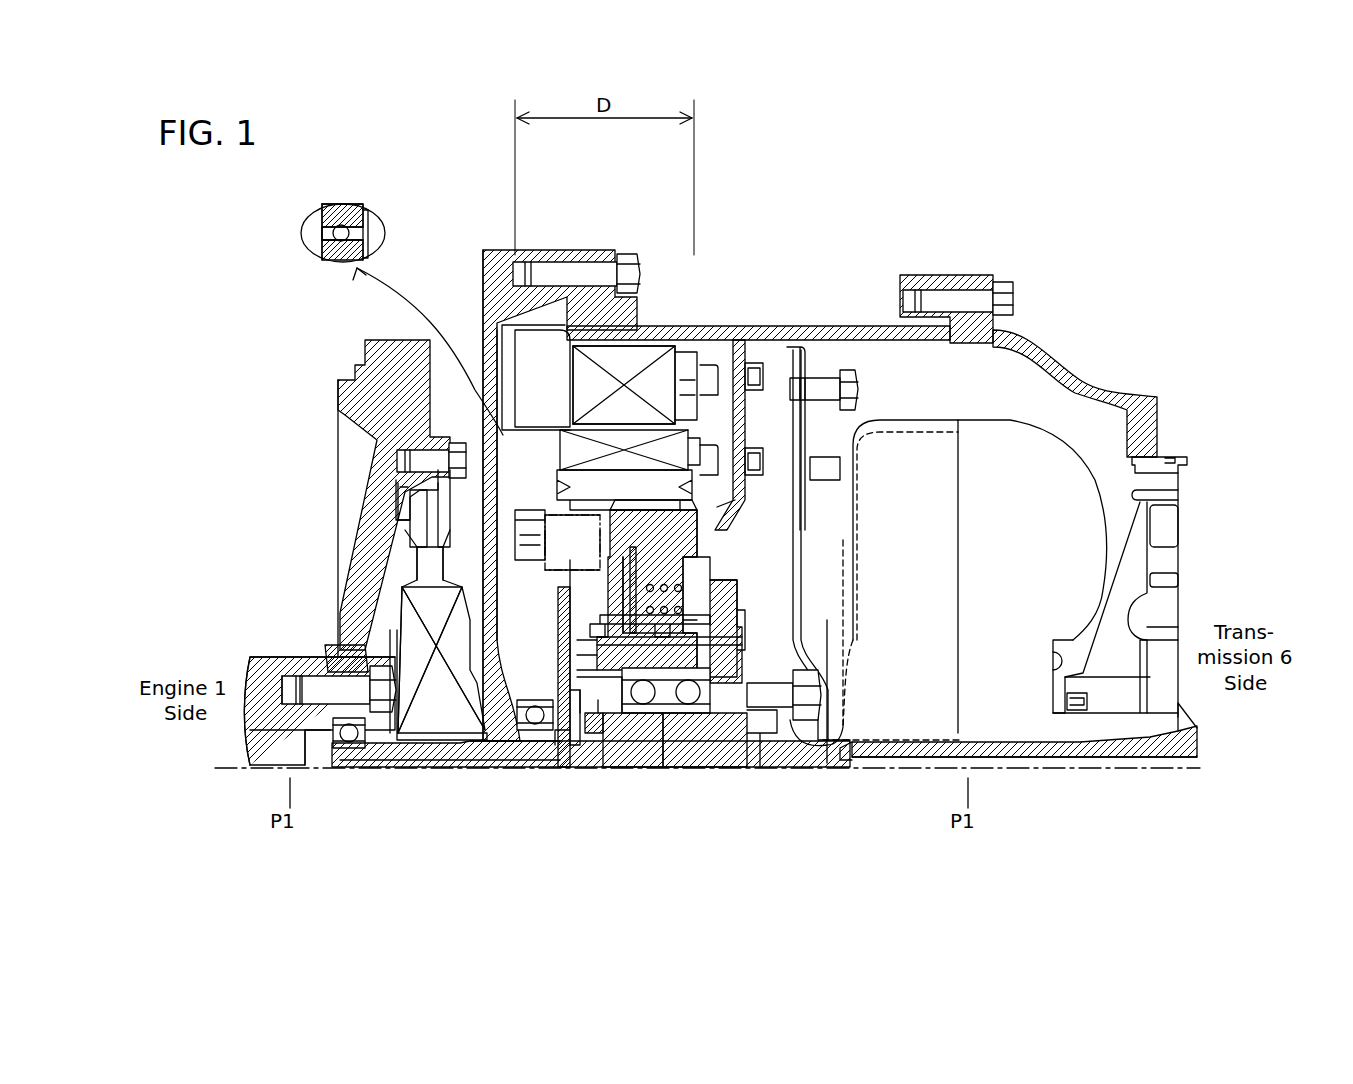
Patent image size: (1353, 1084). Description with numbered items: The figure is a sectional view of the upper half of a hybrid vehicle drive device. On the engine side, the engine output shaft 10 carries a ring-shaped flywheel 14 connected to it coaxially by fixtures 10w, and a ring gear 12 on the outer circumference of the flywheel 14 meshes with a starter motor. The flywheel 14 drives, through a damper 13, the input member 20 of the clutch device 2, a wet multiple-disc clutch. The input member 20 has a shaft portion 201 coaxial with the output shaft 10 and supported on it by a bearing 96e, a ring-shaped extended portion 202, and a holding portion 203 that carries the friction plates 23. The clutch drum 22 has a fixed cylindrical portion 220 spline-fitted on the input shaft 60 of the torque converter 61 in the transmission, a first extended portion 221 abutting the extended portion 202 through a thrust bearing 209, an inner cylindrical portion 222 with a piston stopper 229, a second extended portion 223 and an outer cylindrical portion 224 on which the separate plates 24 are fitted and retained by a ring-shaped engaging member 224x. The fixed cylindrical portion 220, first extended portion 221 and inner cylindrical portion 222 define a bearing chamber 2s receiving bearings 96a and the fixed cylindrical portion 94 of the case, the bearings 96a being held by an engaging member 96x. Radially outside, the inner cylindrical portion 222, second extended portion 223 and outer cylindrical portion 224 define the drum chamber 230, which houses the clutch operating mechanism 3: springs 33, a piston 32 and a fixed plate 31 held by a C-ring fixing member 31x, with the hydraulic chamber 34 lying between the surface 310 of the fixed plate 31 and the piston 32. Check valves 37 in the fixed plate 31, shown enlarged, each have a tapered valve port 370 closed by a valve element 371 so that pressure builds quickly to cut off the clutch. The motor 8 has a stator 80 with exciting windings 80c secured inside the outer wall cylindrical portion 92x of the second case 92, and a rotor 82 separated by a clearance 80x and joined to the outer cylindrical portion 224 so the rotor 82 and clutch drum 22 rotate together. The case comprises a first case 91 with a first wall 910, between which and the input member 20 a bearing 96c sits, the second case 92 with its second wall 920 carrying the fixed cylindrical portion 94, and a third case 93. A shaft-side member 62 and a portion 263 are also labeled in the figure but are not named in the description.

The clutch device 2 is at (398, 530).
The bearing chamber 2s is at (498, 772).
The clutch operating mechanism 3 is at (708, 492).
The drive motor 8 is at (638, 350).
The output shaft 10 is at (258, 662).
The fixtures 10w is at (315, 678).
The ring gear 12 is at (383, 340).
The damper 13 is at (452, 594).
The flywheel 14 is at (384, 463).
The input member 20 is at (370, 770).
The shaft portion 201 is at (412, 770).
The extended portion 202 is at (562, 657).
The holding portion 203 is at (435, 566).
The thrust bearing 209 is at (548, 770).
The clutch drum 22 is at (747, 590).
The fixed cylindrical portion 220 is at (660, 770).
The first extended portion 221 is at (572, 768).
The inner cylindrical portion 222 is at (752, 642).
The second extended portion 223 is at (700, 607).
The outer cylindrical portion 224 is at (660, 515).
The engaging member 224x is at (405, 497).
The piston stopper 229 is at (742, 626).
The friction plates 23 is at (496, 556).
The drum chamber 230 is at (670, 545).
The separate plates 24 is at (509, 528).
The support portion 263 is at (452, 612).
The fixed plate 31 is at (327, 262).
The fixing member 31x is at (347, 660).
The surface 310 is at (366, 255).
The piston 32 is at (690, 560).
The springs 33 is at (684, 585).
The hydraulic chamber 34 is at (605, 770).
The check valve 37 is at (362, 230).
The valve port 370 is at (327, 233).
The valve element 371 is at (348, 205).
The input shaft 60 is at (700, 770).
The torque converter 61 is at (943, 467).
The transmission input shaft 62 is at (1058, 758).
The stator 80 is at (660, 336).
The exciting windings 80c is at (553, 388).
The clearance 80x is at (625, 438).
The rotor 82 is at (598, 264).
The first case 91 is at (489, 252).
The first wall 910 is at (496, 440).
The second case 92 is at (742, 338).
The outer wall cylindrical portion 92x is at (738, 325).
The second wall 920 is at (738, 500).
The third case 93 is at (1003, 330).
The fixed cylindrical portion 94 is at (695, 660).
The bearings 96a is at (722, 770).
The bearing 96c is at (531, 770).
The bearing 96e is at (345, 752).
The engaging member 96x is at (602, 770).